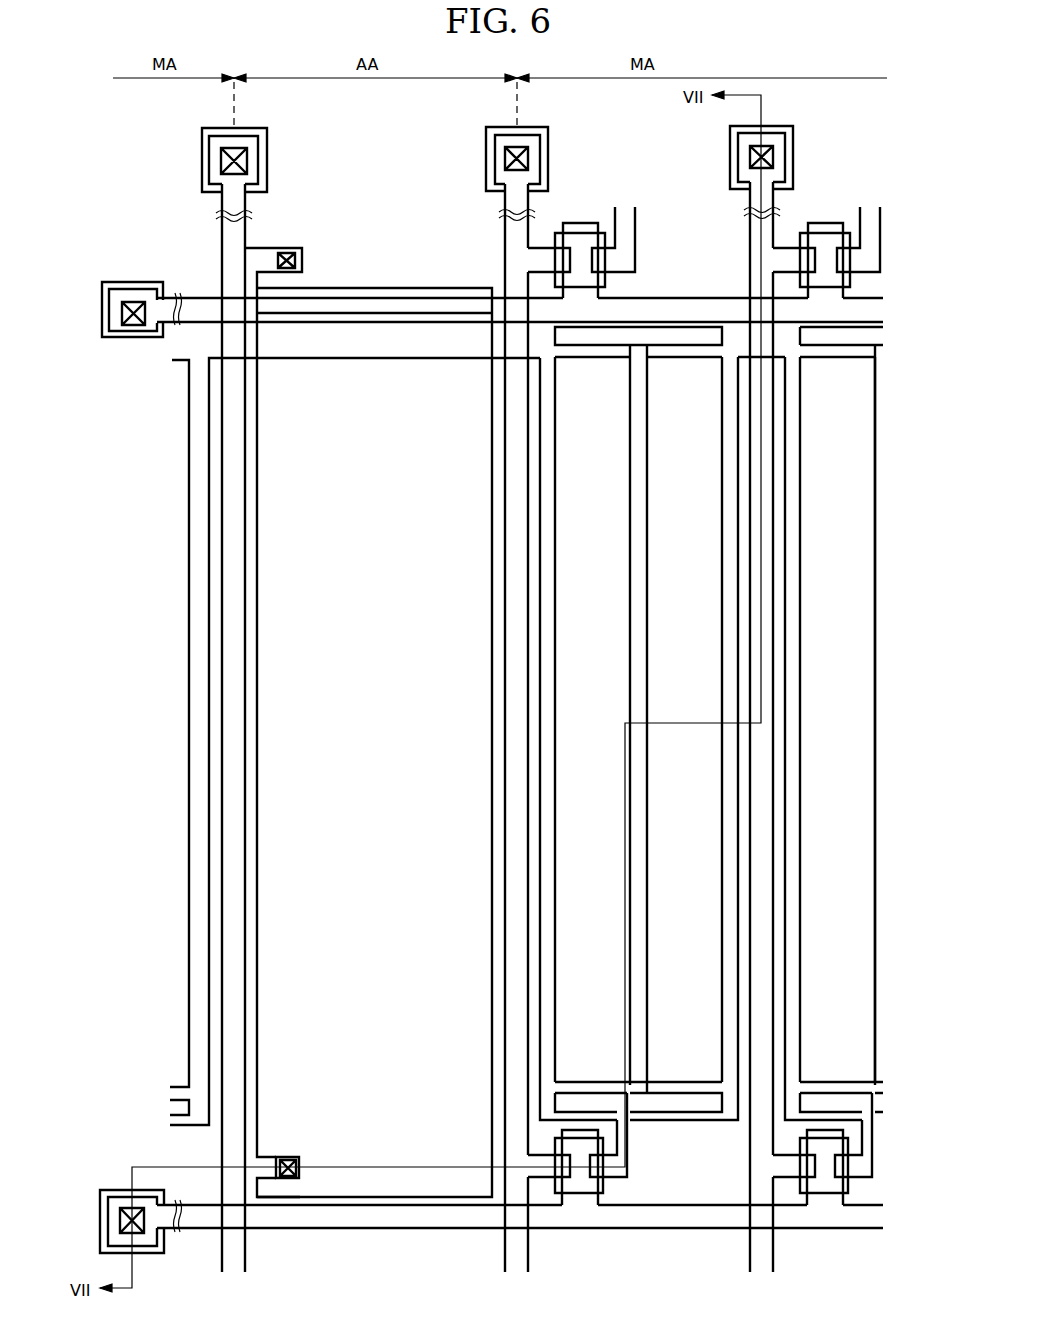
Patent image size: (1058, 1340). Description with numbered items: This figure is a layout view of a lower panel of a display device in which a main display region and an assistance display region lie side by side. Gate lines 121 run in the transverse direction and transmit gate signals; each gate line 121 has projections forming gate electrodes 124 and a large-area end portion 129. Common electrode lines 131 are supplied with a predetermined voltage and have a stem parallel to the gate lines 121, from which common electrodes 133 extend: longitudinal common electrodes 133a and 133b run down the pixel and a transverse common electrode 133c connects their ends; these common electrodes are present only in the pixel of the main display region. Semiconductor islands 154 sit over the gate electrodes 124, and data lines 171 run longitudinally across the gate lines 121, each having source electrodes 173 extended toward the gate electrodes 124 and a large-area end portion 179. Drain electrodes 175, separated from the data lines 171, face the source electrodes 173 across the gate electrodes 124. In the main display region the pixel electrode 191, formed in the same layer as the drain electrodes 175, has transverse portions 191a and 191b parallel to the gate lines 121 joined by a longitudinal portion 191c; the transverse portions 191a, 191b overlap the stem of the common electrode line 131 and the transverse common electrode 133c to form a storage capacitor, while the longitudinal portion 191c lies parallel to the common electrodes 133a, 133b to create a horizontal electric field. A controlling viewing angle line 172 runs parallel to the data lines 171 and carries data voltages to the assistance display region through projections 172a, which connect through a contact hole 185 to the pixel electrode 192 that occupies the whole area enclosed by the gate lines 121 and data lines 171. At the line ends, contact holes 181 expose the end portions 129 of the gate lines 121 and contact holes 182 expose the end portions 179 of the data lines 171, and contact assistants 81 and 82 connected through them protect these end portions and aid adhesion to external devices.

The contact assistant 82 is at (516, 152).
The end portion of data line 179 is at (493, 160).
The contact hole 182 is at (487, 178).
The pixel electrode 191 is at (695, 137).
The transverse portion 191a is at (555, 337).
The transverse portion 191b is at (703, 1093).
The longitudinal portion 191c is at (650, 387).
The end portion of gate line 129 is at (133, 289).
The contact hole 181 is at (120, 313).
The contact assistant 81 is at (121, 338).
The gate line 121 is at (385, 294).
The data line 171 is at (503, 388).
The common electrode line 131 is at (870, 322).
The common electrode 133 is at (128, 893).
The longitudinal common electrode 133a is at (540, 908).
The longitudinal common electrode 133b is at (555, 985).
The transverse common electrode 133c is at (585, 1078).
The controlling viewing angle line 172 is at (220, 467).
The projection 172a is at (270, 1192).
The pixel electrode 192 is at (257, 648).
The contact hole 185 is at (300, 1178).
The source electrode 173 is at (540, 1182).
The semiconductor island 154 is at (578, 1195).
The gate electrode 124 is at (616, 1165).
The drain electrode 175 is at (615, 1177).